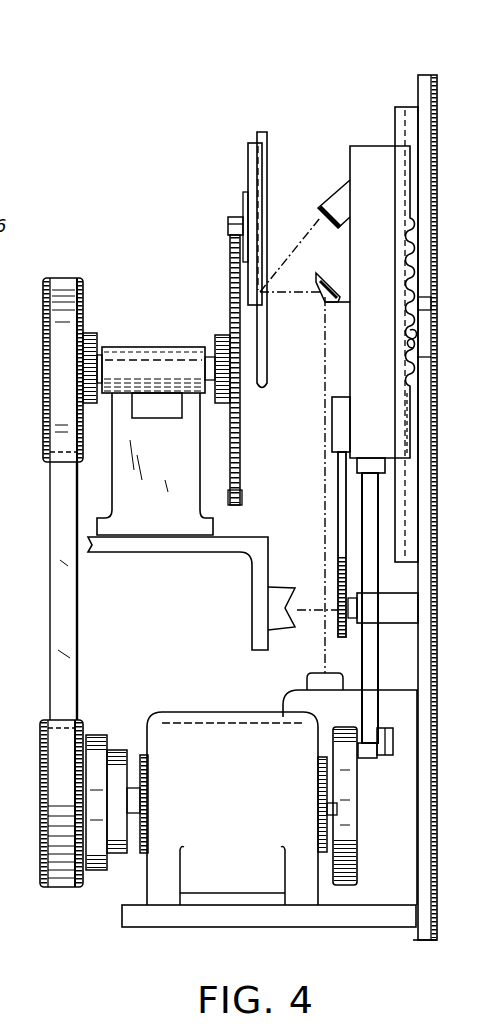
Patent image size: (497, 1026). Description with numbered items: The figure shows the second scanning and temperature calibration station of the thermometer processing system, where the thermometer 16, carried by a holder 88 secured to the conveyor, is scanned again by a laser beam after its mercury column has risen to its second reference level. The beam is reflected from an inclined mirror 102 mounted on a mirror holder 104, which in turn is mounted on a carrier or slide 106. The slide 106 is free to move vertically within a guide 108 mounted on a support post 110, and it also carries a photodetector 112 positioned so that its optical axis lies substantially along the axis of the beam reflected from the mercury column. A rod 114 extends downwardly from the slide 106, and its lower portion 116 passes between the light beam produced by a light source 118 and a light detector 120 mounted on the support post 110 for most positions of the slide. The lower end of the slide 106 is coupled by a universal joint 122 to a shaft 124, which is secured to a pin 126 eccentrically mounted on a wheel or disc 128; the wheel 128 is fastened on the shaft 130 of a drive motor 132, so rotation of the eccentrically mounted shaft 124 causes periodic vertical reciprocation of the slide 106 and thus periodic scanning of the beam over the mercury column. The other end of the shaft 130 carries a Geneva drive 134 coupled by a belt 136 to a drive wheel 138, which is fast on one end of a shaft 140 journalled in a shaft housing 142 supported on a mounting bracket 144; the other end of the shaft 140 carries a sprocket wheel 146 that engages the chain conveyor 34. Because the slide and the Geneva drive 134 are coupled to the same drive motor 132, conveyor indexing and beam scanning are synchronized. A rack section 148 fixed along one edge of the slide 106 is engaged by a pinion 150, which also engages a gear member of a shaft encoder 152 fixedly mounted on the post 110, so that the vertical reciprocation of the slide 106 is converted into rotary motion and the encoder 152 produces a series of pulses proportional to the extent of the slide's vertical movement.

The thermometer 16 is at (267, 347).
The chain conveyor 34 is at (227, 221).
The holder 88 is at (250, 162).
The inclined mirror 102 is at (337, 307).
The mirror holder 104 is at (339, 272).
The slide 106 is at (375, 131).
The guide 108 is at (402, 107).
The support post 110 is at (427, 75).
The photodetector 112 is at (328, 202).
The rod 114 is at (338, 485).
The lower portion of rod 116 is at (327, 637).
The light source 118 is at (273, 586).
The light detector 120 is at (403, 618).
The universal joint 122 is at (372, 466).
The shaft 124 is at (368, 588).
The pin 126 is at (390, 752).
The wheel 128 is at (348, 833).
The shaft of drive motor 130 is at (330, 807).
The drive motor 132 is at (269, 801).
The Geneva drive 134 is at (102, 732).
The belt 136 is at (70, 640).
The drive wheel 138 is at (50, 320).
The shaft 140 is at (100, 358).
The shaft housing 142 is at (183, 347).
The mounting bracket 144 is at (122, 477).
The sprocket wheel 146 is at (231, 257).
The rack section 148 is at (407, 258).
The pinion 150 is at (430, 357).
The shaft encoder 152 is at (406, 400).